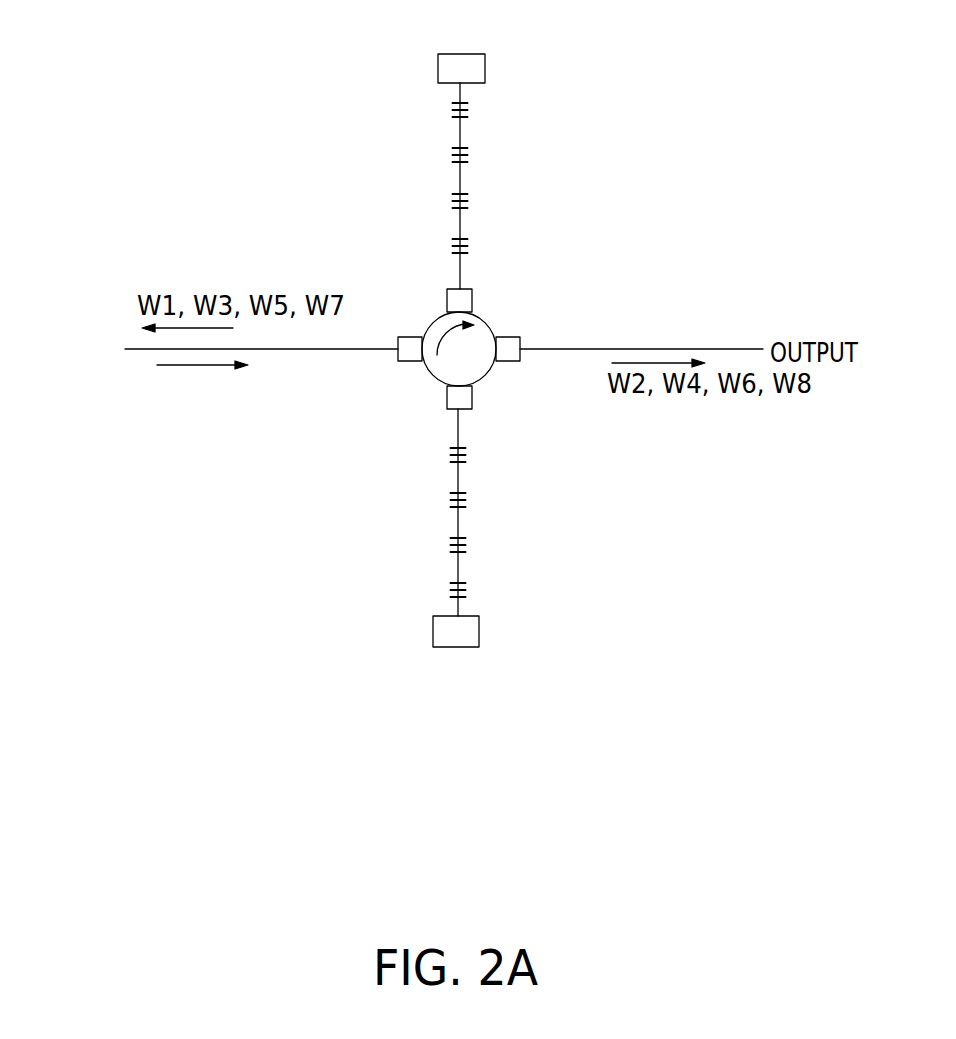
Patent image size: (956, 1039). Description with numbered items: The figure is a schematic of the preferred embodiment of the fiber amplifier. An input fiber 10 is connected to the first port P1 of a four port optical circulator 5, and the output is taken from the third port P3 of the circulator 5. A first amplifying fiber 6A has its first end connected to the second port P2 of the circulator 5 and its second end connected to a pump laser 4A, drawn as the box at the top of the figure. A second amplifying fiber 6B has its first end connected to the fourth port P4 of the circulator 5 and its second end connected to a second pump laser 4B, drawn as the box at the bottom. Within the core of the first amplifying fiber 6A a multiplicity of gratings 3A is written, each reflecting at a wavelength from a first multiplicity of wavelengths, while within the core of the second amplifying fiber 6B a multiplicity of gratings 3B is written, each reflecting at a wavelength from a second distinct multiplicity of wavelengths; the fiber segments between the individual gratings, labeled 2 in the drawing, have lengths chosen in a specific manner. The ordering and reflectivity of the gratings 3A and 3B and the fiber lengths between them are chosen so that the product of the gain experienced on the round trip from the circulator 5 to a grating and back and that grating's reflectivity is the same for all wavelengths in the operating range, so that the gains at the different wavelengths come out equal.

The input fiber 10 is at (147, 349).
The four port optical circulator 5 is at (471, 349).
The first port P1 is at (395, 336).
The second port P2 is at (476, 290).
The third port P3 is at (519, 335).
The fourth port P4 is at (477, 402).
The fiber Bragg grating 2 is at (468, 349).
The gratings 3A is at (471, 154).
The gratings 3B is at (472, 591).
The first amplifying fiber 6A is at (461, 179).
The second amplifying fiber 6B is at (452, 520).
The pump laser 4A is at (486, 63).
The second pump laser 4B is at (480, 626).